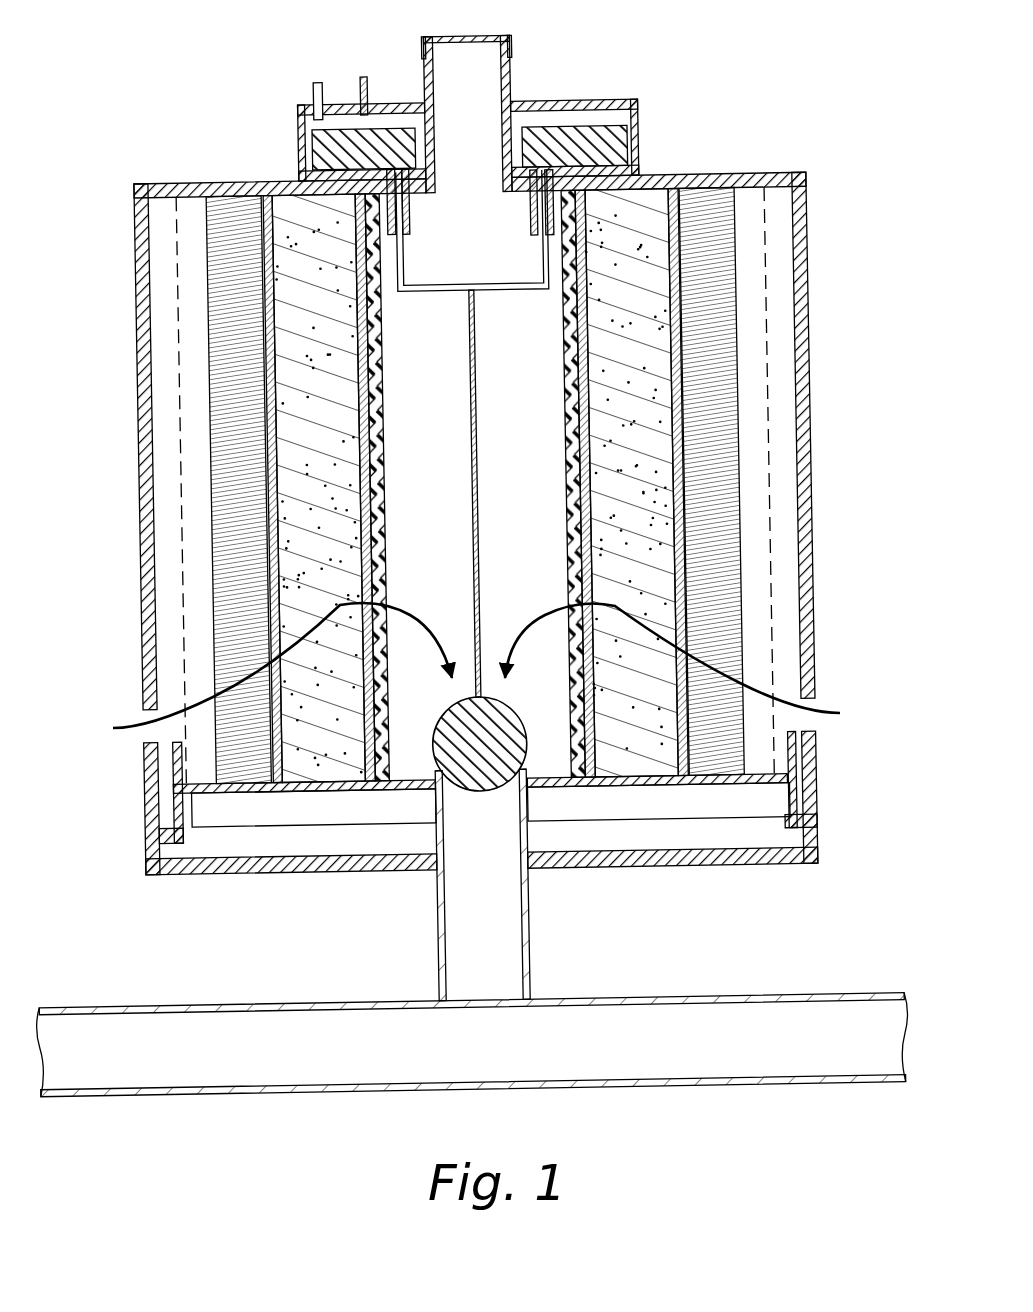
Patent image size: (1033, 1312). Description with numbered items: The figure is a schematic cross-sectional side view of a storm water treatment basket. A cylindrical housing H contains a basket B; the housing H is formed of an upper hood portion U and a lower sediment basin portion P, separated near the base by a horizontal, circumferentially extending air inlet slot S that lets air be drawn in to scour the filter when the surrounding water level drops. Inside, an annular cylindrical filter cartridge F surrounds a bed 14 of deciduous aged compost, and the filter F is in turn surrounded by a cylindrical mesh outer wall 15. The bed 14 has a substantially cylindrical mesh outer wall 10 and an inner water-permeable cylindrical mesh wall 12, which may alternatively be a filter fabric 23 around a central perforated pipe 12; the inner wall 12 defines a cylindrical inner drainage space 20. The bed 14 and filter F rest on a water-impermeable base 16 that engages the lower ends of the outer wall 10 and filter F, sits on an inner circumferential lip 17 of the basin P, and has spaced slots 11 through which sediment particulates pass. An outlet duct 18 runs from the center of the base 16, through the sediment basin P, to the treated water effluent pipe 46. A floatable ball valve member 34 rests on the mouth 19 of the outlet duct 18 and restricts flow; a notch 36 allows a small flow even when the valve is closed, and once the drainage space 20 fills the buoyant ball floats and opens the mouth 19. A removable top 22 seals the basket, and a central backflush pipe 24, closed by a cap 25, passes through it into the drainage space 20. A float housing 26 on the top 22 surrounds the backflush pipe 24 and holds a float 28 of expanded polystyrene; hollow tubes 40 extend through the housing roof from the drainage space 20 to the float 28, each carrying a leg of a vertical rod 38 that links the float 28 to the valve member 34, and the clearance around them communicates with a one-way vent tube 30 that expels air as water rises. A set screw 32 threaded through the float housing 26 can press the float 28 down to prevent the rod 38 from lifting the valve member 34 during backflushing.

The outer wall 10 is at (258, 282).
The spaced slots 11 is at (210, 868).
The inner water-permeable cylindrical mesh wall 12 is at (382, 440).
The bed 14 is at (300, 350).
The cylindrical mesh outer wall 15 is at (180, 450).
The base 16 is at (262, 795).
The inner circumferential lip 17 is at (160, 828).
The outlet duct 18 is at (530, 905).
The mouth 19 is at (440, 806).
The inner drainage space 20 is at (508, 572).
The removable top 22 is at (726, 172).
The filter fabric 23 is at (390, 500).
The central backflush pipe 24 is at (510, 80).
The cap 25 is at (505, 45).
The float housing 26 is at (588, 105).
The float 28 is at (348, 135).
The one-way vent tube 30 is at (315, 100).
The set screw 32 is at (364, 76).
The ball valve member 34 is at (520, 705).
The notch 36 is at (432, 760).
The vertical rod 38 is at (480, 350).
The hollow tubes 40 is at (410, 215).
The treated water effluent pipe 46 is at (680, 1092).
The basket B is at (740, 52).
The filter cartridge F is at (232, 210).
The housing H is at (130, 672).
The sediment basin portion P is at (818, 790).
The air inlet slot S is at (828, 700).
The upper hood portion U is at (808, 198).